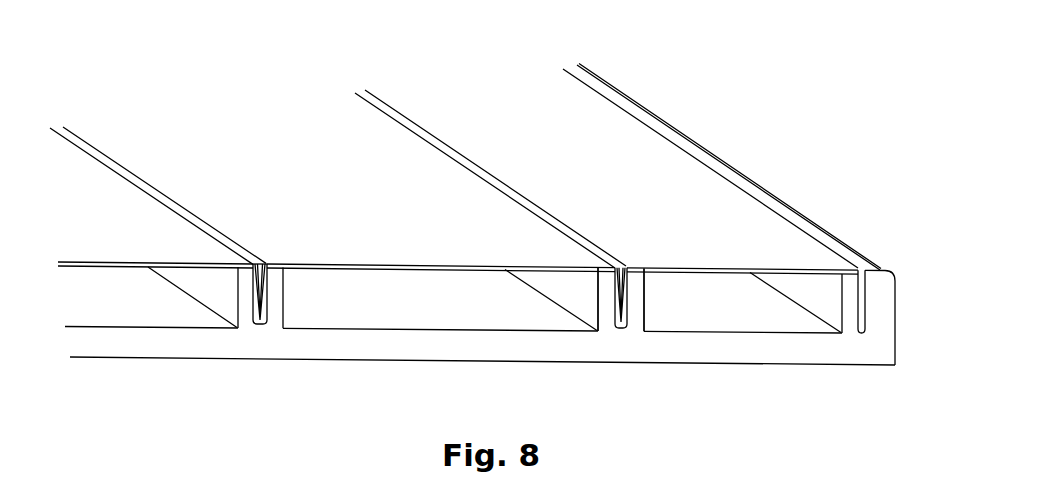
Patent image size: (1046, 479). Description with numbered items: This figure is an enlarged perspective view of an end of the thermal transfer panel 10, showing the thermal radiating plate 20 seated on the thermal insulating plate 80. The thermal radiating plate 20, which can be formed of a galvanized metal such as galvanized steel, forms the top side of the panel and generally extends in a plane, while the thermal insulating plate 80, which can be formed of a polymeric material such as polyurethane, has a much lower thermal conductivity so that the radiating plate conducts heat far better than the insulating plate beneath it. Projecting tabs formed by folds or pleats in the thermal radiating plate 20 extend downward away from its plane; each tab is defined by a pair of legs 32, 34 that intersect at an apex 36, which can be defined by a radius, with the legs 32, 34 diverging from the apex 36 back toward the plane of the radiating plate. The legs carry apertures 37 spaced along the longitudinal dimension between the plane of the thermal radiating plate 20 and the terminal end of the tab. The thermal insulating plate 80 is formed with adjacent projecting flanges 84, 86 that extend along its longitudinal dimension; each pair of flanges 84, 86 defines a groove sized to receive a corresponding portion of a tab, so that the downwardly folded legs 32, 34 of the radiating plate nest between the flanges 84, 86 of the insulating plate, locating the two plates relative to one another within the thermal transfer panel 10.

The thermal transfer panel 10 is at (659, 102).
The thermal radiating plate 20 is at (204, 153).
The leg 32 is at (250, 302).
The leg 34 is at (270, 302).
The apex 36 is at (260, 325).
The aperture 37 is at (263, 265).
The thermal insulating plate 80 is at (103, 342).
The projecting flange 84 is at (601, 308).
The projecting flange 86 is at (637, 308).